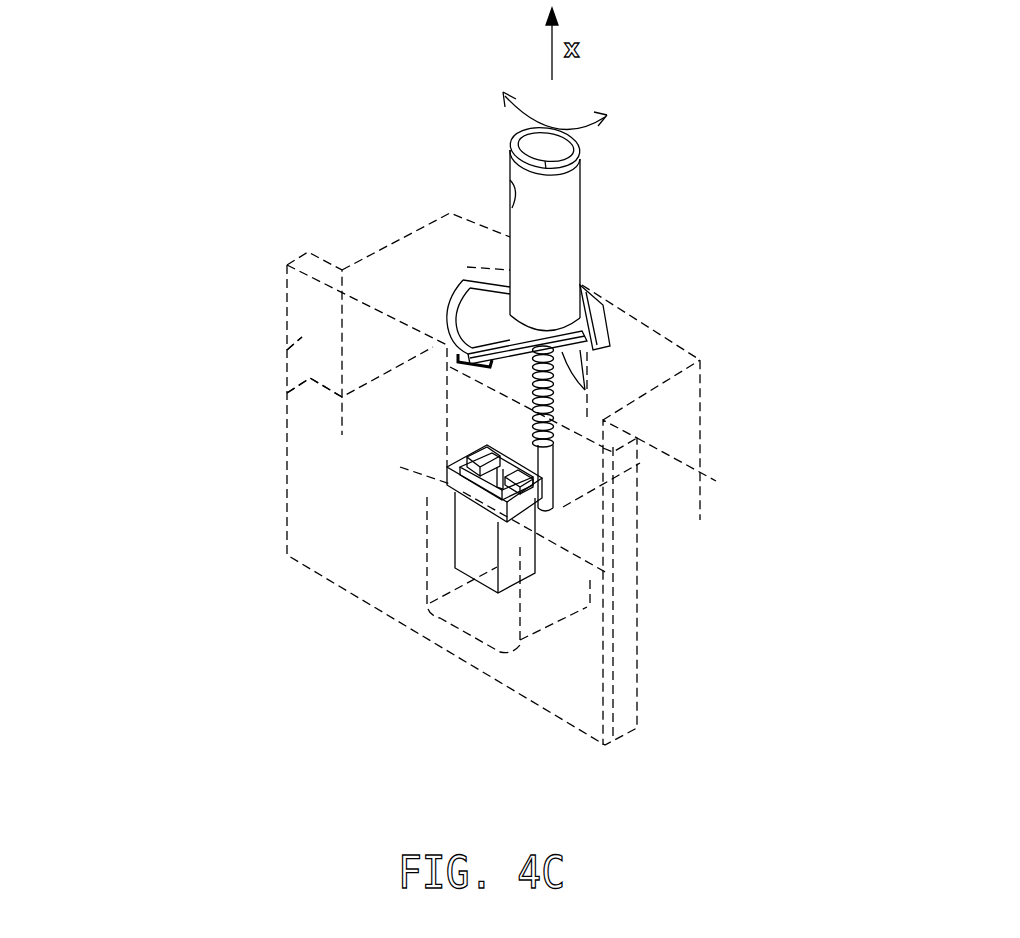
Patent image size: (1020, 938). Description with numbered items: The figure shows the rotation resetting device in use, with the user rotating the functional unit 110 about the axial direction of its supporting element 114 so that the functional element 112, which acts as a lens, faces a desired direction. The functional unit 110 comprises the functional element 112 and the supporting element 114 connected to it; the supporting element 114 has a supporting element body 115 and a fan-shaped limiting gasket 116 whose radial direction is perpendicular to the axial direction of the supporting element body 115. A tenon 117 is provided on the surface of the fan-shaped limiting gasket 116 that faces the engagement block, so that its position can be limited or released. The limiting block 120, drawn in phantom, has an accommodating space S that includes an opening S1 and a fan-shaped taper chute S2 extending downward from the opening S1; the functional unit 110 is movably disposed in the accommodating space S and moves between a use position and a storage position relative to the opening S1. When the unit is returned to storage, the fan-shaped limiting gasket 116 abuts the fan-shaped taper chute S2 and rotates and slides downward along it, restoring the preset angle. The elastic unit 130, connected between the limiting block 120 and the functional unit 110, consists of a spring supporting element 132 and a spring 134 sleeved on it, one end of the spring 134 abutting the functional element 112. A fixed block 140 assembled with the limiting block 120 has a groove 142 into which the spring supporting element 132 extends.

The functional unit 110 is at (152, 143).
The functional element 112 is at (510, 192).
The supporting element 114 is at (210, 183).
The supporting element body 115 is at (527, 233).
The fan-shaped limiting gasket 116 is at (490, 308).
The tenon 117 is at (464, 362).
The limiting block 120 is at (307, 340).
The groove 142 is at (340, 428).
The fixed block 140 is at (327, 532).
The elastic unit 130 is at (768, 440).
The spring supporting element 132 is at (553, 445).
The spring 134 is at (555, 408).
The accommodating space S is at (776, 211).
The opening S1 is at (603, 325).
The fan-shaped taper chute S2 is at (593, 350).